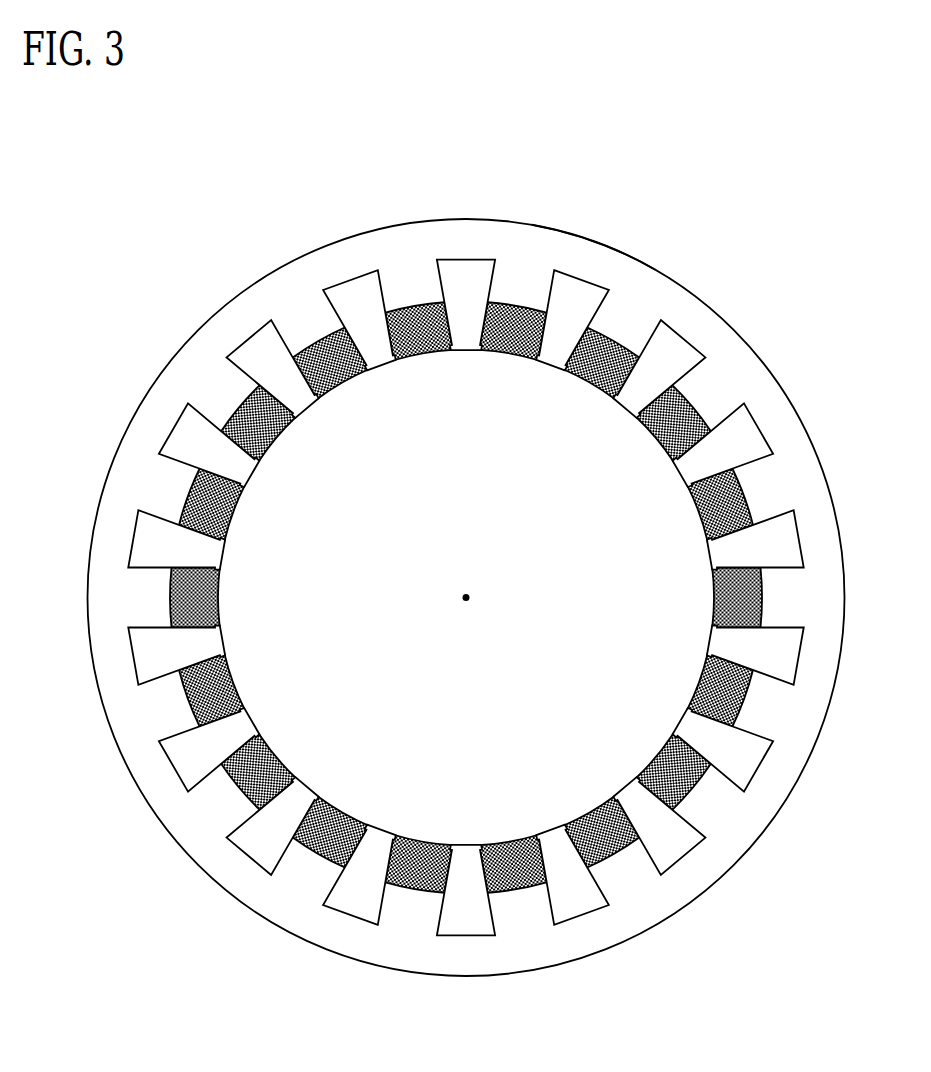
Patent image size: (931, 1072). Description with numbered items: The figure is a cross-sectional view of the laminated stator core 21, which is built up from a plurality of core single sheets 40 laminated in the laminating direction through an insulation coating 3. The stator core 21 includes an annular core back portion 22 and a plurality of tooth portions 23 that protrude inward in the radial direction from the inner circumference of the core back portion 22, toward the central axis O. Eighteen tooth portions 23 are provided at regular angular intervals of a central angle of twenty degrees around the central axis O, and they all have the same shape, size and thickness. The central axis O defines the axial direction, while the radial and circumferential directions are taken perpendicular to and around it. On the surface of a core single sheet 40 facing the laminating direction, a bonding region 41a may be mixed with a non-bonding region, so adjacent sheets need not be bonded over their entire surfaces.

The insulation coating 3 is at (447, 563).
The core single sheet 40 is at (246, 308).
The stator core 21 is at (424, 563).
The core back portion 22 is at (657, 285).
The tooth portion 23 is at (610, 315).
The bonding region 41a is at (597, 368).
The central axis O is at (469, 593).